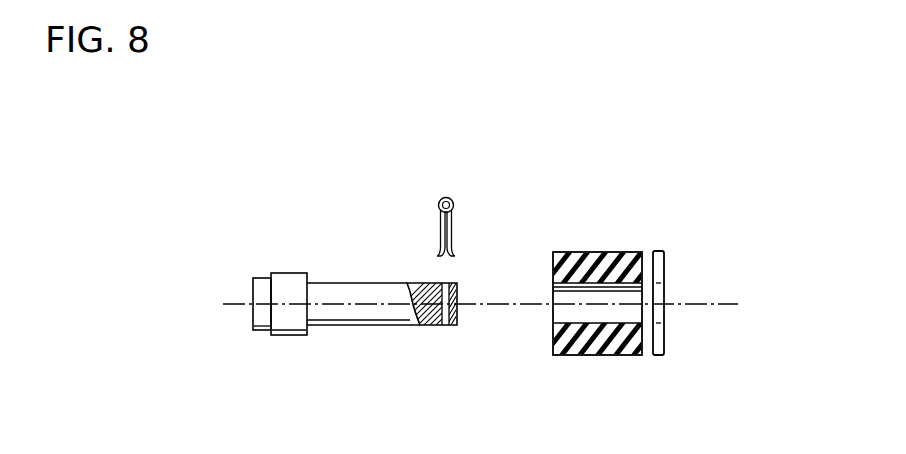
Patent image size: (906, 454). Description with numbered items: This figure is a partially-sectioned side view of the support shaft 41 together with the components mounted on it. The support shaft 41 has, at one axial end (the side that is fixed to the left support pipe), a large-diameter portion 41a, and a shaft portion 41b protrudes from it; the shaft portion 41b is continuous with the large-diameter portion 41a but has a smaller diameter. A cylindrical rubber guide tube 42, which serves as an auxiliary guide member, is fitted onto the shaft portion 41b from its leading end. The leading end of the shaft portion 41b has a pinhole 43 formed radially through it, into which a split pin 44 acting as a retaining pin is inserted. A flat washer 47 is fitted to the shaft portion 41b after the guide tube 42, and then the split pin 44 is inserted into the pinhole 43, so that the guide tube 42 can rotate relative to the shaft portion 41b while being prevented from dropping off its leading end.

The support shaft 41 is at (370, 308).
The large-diameter portion 41a is at (287, 336).
The shaft portion 41b is at (357, 325).
The guide tube 42 is at (614, 252).
The pinhole 43 is at (447, 326).
The split pin 44 is at (446, 197).
The flat washer 47 is at (660, 260).